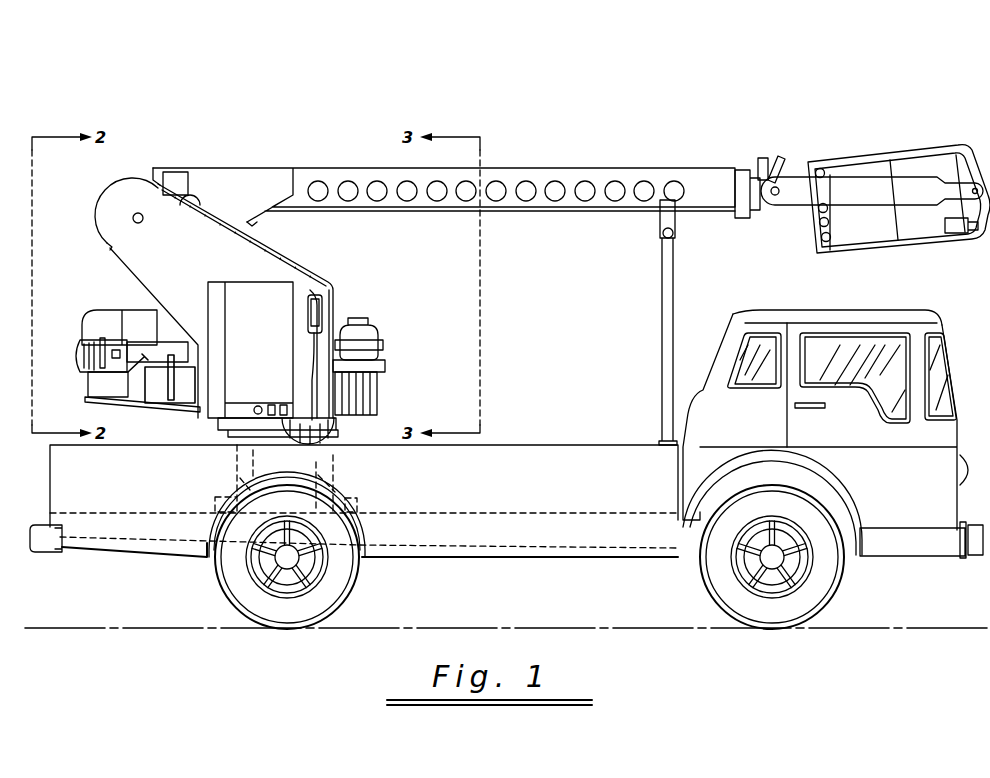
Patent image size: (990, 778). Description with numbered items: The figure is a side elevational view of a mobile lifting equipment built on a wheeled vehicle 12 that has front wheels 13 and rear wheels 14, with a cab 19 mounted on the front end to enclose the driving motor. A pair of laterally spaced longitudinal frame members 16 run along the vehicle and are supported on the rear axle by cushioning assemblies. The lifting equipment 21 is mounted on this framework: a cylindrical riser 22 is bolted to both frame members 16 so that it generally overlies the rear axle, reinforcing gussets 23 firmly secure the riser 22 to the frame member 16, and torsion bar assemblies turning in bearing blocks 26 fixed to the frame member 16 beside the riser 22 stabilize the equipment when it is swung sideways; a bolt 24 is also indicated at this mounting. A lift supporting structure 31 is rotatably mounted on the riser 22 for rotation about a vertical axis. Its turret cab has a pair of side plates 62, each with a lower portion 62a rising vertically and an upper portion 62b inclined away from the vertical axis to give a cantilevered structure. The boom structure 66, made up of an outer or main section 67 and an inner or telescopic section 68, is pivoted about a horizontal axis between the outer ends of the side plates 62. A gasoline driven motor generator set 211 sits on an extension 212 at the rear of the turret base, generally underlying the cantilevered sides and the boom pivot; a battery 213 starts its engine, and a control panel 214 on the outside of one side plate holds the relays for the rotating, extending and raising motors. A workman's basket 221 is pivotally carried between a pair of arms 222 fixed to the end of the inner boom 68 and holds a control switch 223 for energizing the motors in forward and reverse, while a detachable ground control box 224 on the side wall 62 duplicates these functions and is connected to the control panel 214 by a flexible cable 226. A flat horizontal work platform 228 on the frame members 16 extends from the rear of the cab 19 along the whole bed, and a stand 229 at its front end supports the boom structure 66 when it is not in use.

The wheeled vehicle 12 is at (733, 300).
The front wheels 13 is at (822, 592).
The rear wheels 14 is at (345, 590).
The longitudinal frame members 16 is at (592, 542).
The cab 19 is at (802, 302).
The lifting equipment 21 is at (388, 392).
The cylindrical riser 22 is at (255, 451).
The reinforcing gussets 23 is at (328, 458).
The mounting bolt 24 is at (340, 490).
The bearing blocks 26 is at (355, 505).
The lift supporting structure 31 is at (95, 230).
The side plates 62 is at (176, 252).
The lower portion of side plate 62a is at (334, 318).
The upper portion of side plate 62b is at (145, 268).
The boom structure 66 is at (548, 162).
The outer boom section 67 is at (604, 212).
The inner boom section 68 is at (752, 172).
The motor generator set 211 is at (95, 328).
The extension 212 is at (100, 400).
The battery 213 is at (155, 400).
The control panel 214 is at (247, 300).
The workman's basket 221 is at (848, 156).
The arms 222 is at (860, 196).
The control switch 223 is at (955, 233).
The ground control box 224 is at (314, 292).
The flexible cable 226 is at (311, 360).
The work platform 228 is at (560, 456).
The stand 229 is at (662, 342).